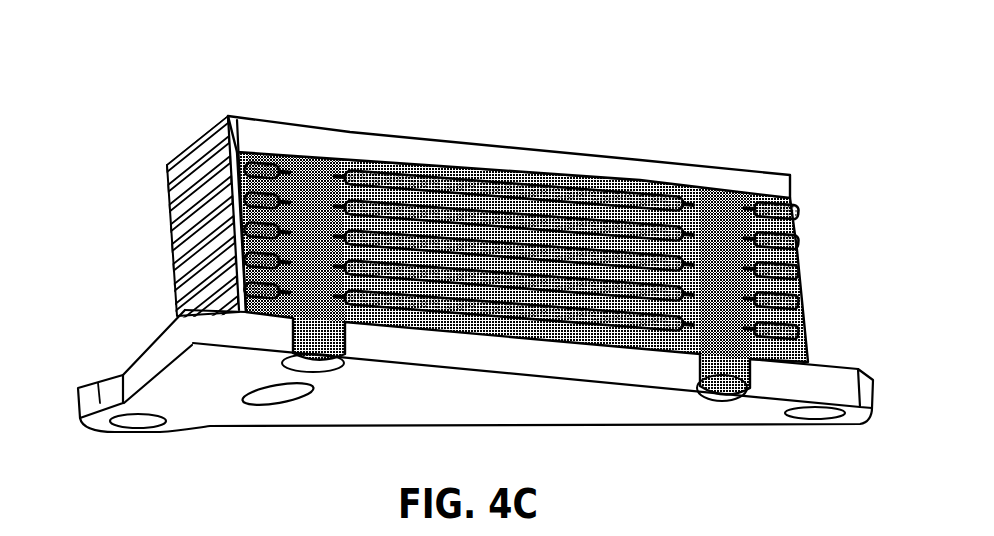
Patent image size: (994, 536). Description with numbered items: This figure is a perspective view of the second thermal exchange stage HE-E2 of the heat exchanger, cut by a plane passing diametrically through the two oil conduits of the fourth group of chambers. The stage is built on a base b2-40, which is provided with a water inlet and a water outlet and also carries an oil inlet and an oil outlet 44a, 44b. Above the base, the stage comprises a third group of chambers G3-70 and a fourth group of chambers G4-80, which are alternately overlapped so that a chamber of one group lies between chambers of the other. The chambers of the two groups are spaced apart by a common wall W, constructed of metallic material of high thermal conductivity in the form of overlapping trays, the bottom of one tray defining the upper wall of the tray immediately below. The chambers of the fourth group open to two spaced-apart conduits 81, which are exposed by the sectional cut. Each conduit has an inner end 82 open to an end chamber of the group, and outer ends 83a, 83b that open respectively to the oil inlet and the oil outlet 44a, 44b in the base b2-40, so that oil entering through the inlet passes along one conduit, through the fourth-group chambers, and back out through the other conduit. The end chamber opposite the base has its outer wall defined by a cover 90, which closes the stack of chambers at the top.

The cover 90 is at (272, 118).
The second stage of thermal exchange of heat exchanger HE-E2 is at (162, 163).
The inner ends of conduits 82 is at (308, 180).
The conduits 81 is at (313, 228).
The third group of chambers G3-70 is at (482, 220).
The fourth group of chambers G4-80 is at (582, 215).
The outer end of conduit 83a is at (312, 293).
The outer end of conduit 83b is at (728, 325).
The common wall W is at (514, 296).
The base of second stage b2-40 is at (146, 338).
The oil inlet 44a is at (320, 352).
The oil outlet 44b is at (718, 387).